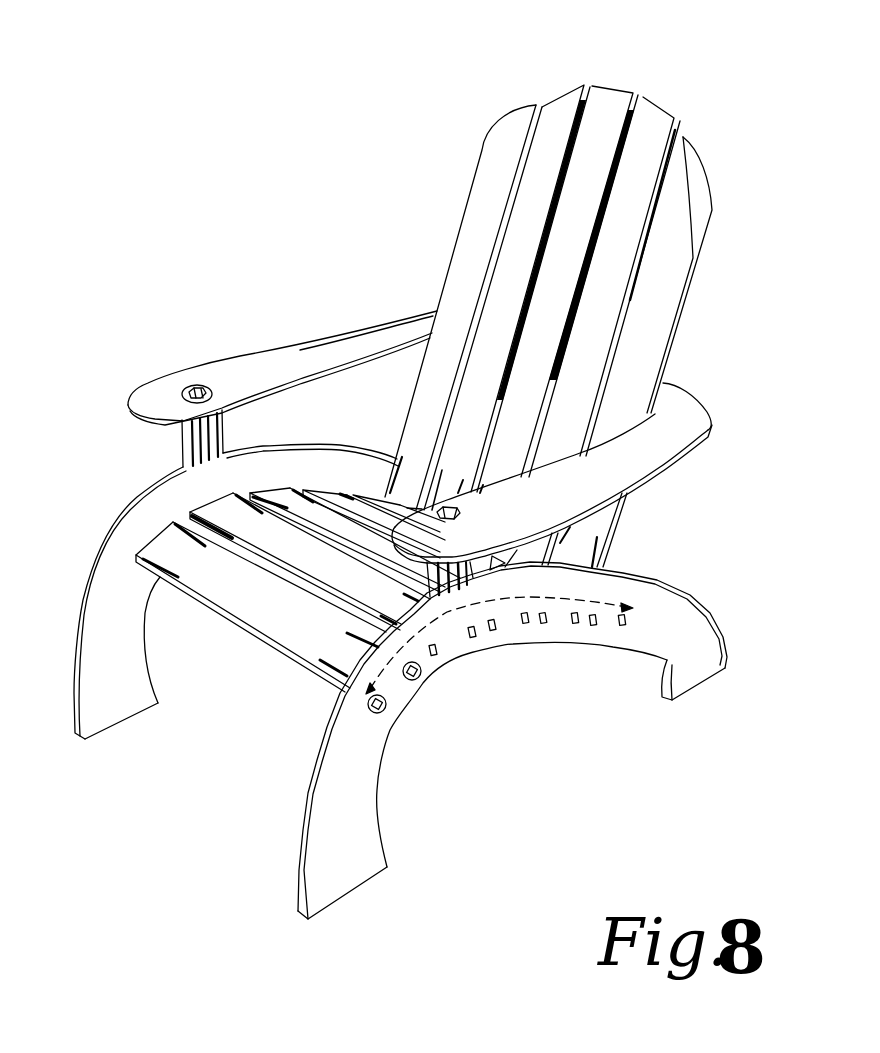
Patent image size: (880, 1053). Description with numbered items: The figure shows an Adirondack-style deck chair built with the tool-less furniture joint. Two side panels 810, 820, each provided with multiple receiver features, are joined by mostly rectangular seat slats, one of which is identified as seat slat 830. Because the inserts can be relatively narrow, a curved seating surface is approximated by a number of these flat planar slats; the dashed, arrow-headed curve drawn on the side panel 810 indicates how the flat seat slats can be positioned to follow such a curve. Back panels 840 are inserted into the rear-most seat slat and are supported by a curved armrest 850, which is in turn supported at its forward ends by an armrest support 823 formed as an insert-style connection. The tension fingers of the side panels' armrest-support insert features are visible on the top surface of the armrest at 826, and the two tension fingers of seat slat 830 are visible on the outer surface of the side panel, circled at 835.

The side panel 810 is at (371, 866).
The side panel 820 is at (134, 710).
The armrest support 823 is at (173, 437).
The tension fingers of the armrest-support insert features 826 is at (197, 383).
The seat slat 830 is at (245, 592).
The tension fingers of seat slat 835 is at (419, 678).
The back panels 840 is at (686, 140).
The armrest 850 is at (158, 378).